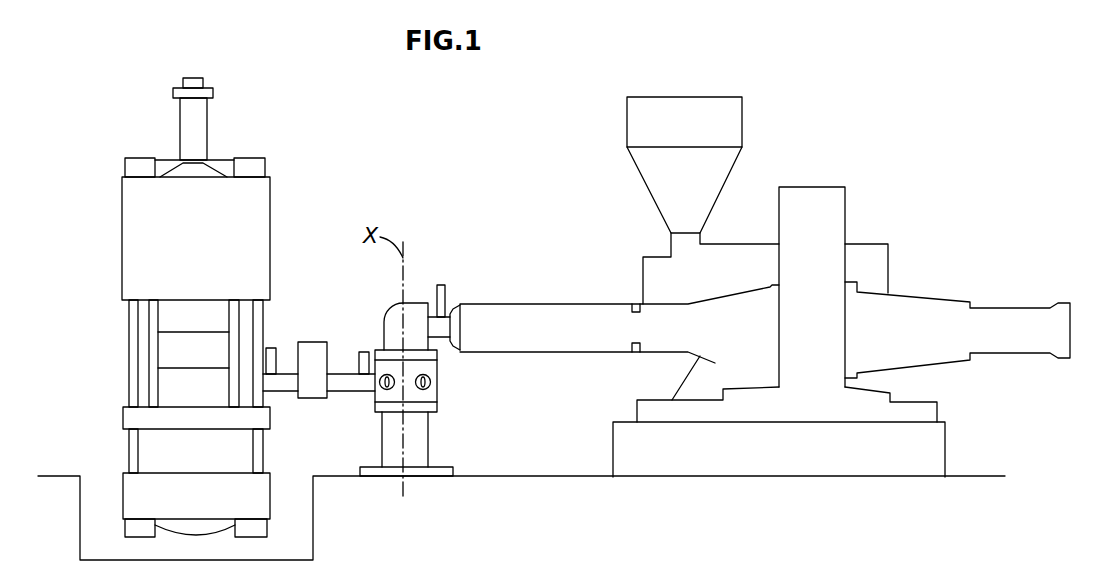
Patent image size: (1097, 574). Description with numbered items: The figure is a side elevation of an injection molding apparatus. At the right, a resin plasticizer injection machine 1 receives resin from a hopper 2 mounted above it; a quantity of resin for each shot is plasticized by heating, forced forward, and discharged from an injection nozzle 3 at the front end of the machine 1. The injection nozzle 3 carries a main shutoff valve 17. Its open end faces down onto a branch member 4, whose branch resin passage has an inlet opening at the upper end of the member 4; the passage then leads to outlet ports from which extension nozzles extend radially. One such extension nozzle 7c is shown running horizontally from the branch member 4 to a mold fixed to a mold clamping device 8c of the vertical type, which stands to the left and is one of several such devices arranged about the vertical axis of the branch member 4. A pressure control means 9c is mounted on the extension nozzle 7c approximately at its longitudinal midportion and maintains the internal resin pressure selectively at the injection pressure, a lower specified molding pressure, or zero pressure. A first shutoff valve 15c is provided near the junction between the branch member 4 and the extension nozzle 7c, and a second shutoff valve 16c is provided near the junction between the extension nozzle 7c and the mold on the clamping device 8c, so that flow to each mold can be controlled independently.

The resin plasticizer injection machine 1 is at (907, 313).
The hopper 2 is at (640, 132).
The injection nozzle 3 is at (440, 333).
The branch member 4 is at (430, 393).
The extension nozzle 7c is at (343, 383).
The mold clamping device 8c is at (132, 287).
The pressure control means 9c is at (315, 348).
The first shutoff valve 15c is at (363, 352).
The second shutoff valve 16c is at (268, 348).
The main shutoff valve 17 is at (443, 283).